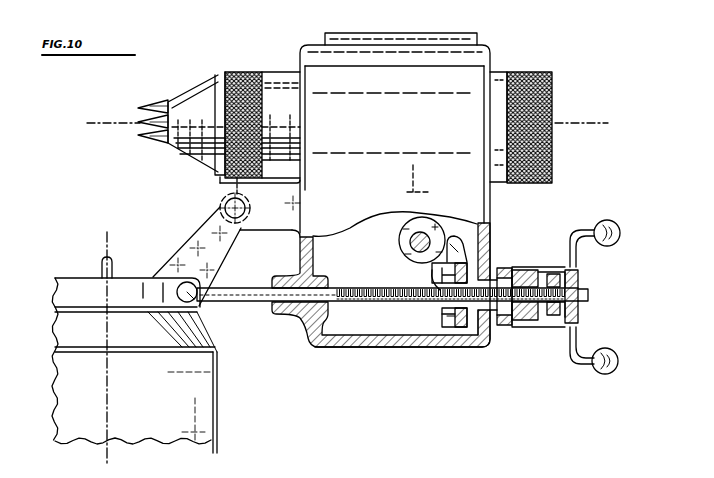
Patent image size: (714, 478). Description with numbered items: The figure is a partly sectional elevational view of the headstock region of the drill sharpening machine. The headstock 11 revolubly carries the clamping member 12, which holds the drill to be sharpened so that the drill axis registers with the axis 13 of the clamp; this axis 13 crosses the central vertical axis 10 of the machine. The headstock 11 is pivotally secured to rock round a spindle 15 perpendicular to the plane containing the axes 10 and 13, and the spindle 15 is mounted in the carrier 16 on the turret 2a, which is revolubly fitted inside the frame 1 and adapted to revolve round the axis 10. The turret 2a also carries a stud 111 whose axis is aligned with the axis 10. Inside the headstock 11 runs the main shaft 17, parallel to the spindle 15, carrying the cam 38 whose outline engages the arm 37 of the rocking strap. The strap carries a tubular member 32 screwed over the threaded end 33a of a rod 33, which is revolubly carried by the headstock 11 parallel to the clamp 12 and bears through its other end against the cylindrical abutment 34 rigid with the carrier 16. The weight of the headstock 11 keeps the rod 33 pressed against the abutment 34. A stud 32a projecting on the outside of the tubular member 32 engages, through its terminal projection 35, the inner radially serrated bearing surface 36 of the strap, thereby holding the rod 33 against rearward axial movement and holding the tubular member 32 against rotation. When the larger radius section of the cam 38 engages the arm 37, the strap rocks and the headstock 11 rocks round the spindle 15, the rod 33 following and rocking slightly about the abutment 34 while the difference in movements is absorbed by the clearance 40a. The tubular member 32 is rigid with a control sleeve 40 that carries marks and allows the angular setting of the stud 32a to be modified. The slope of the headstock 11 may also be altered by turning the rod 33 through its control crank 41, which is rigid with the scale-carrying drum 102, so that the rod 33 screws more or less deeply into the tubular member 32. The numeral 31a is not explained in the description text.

The frame 1 is at (205, 412).
The turret 2a is at (67, 292).
The central vertical axis 10 is at (109, 403).
The headstock 11 is at (481, 58).
The clamping member 12 is at (184, 97).
The axis of the clamp 13 is at (94, 126).
The spindle 15 is at (248, 208).
The carrier 16 is at (195, 237).
The main shaft 17 is at (410, 241).
The guide 31a is at (464, 326).
The tubular member 32 is at (486, 318).
The stud 32a is at (432, 280).
The rod 33 is at (238, 302).
The threaded end 33a is at (372, 302).
The cylindrical abutment 34 is at (195, 303).
The terminal projection 35 is at (445, 268).
The serrated bearing surface 36 is at (443, 317).
The arm 37 is at (452, 243).
The cam 38 is at (421, 219).
The control sleeve 40 is at (502, 270).
The clearance 40a is at (490, 276).
The control crank 41 is at (605, 348).
The scale-carrying drum 102 is at (553, 270).
The stud 111 is at (100, 262).